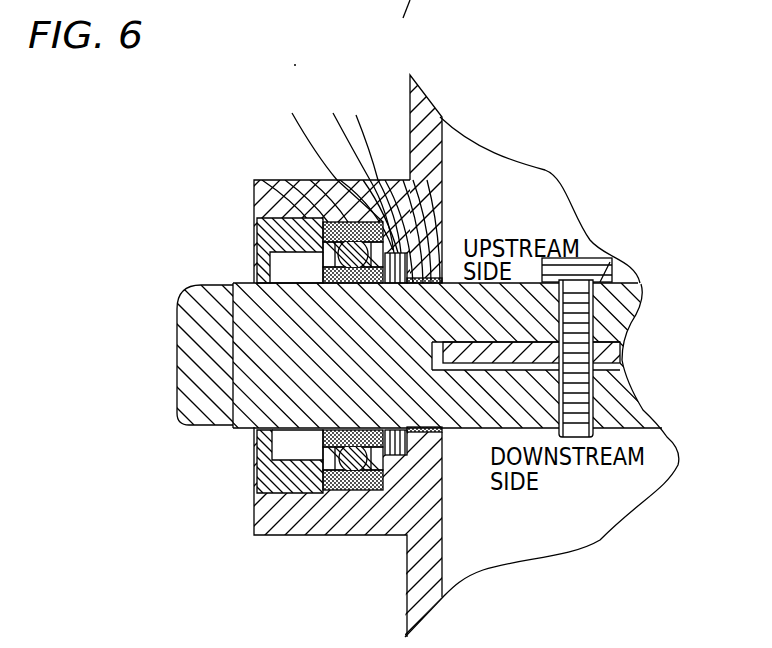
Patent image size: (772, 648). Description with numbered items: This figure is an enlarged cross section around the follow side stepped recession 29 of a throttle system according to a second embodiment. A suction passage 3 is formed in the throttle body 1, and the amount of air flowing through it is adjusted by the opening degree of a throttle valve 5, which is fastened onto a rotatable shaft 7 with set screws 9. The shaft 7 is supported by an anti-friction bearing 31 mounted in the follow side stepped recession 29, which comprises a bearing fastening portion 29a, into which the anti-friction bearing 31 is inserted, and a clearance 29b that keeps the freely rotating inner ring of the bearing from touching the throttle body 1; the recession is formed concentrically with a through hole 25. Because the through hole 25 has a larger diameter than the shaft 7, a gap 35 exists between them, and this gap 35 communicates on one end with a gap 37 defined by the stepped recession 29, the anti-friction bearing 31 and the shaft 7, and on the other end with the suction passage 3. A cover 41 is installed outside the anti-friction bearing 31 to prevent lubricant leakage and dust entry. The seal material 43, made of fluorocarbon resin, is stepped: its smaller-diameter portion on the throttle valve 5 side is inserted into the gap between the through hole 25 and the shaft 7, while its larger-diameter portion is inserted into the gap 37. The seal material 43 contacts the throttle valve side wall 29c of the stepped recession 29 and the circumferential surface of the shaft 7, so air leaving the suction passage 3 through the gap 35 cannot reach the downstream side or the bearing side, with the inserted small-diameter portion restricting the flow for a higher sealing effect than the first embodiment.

The throttle body 1 is at (302, 520).
The suction passage 3 is at (477, 182).
The throttle valve 5 is at (627, 281).
The shaft 7 is at (677, 448).
The set screws 9 is at (612, 258).
The through hole 25 is at (398, 253).
The follow side stepped recession 29 is at (268, 97).
The bearing fastening portion 29a is at (324, 157).
The clearance 29b is at (349, 173).
The throttle valve side wall 29c is at (372, 173).
The anti-friction bearing 31 is at (300, 218).
The gap 35 is at (443, 281).
The gap 37 is at (393, 468).
The cover 41 is at (257, 232).
The seal material 43 is at (326, 222).